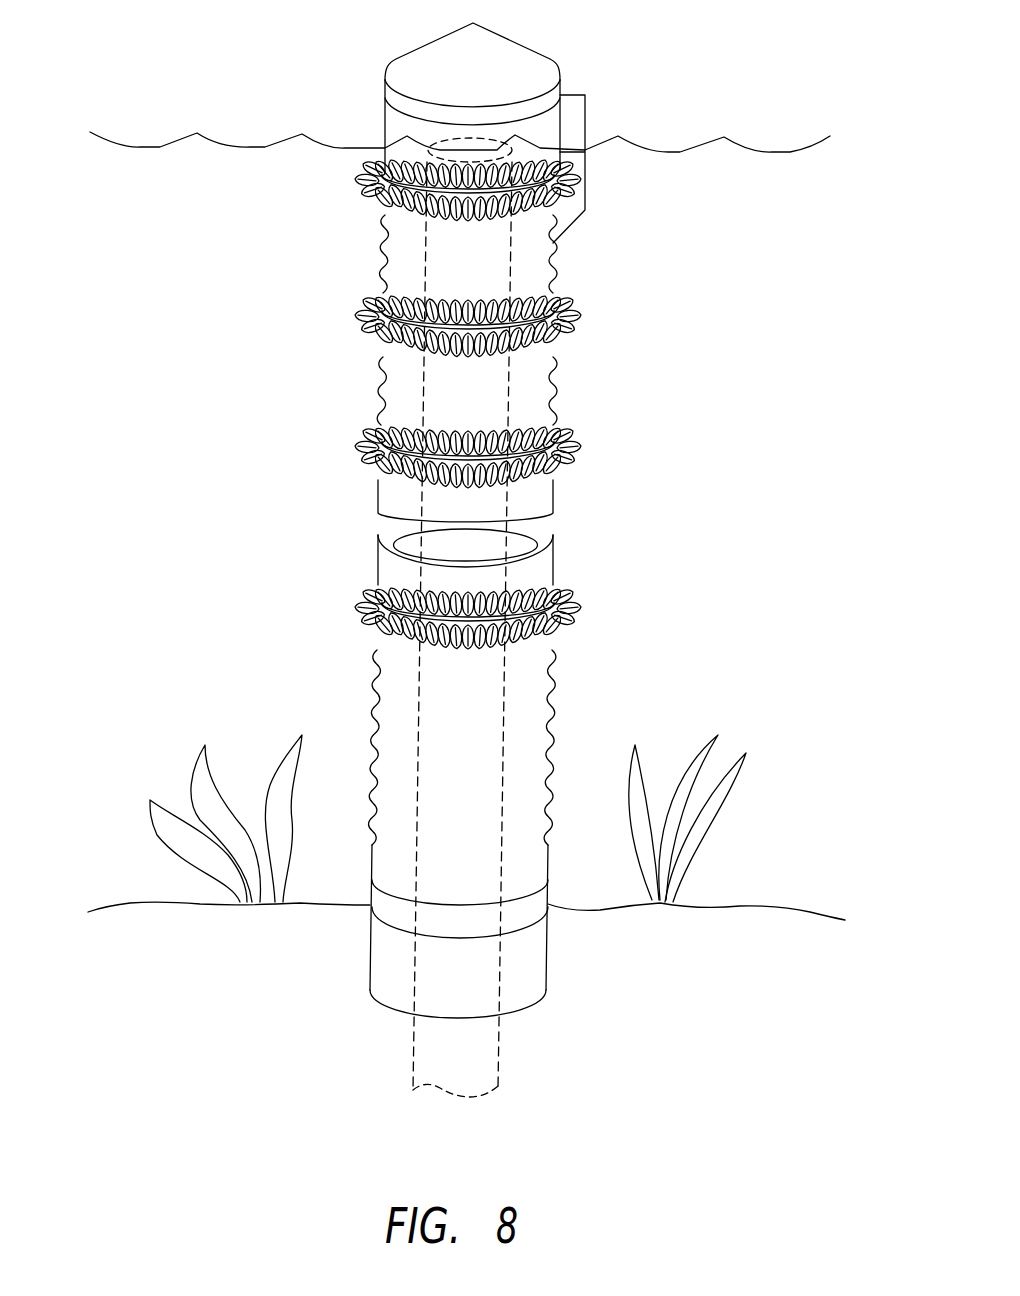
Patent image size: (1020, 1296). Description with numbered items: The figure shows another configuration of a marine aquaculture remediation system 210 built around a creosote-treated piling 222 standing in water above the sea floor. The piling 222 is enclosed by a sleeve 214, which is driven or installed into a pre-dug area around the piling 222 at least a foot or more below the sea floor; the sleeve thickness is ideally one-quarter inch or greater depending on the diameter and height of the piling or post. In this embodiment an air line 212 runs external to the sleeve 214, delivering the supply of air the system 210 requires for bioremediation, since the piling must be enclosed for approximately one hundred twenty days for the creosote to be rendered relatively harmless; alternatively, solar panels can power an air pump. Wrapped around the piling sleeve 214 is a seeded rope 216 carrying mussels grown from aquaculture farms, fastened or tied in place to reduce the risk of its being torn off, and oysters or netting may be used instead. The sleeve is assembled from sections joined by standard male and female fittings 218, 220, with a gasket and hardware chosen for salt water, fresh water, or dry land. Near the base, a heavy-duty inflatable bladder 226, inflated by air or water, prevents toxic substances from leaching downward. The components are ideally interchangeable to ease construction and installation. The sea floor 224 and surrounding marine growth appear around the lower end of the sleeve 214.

The marine aquaculture remediation system 210 is at (570, 252).
The air line 212 is at (590, 138).
The sleeve 214 is at (557, 386).
The seeded rope 216 is at (556, 429).
The male fitting 218 is at (567, 566).
The female fitting 220 is at (570, 493).
The piling 222 is at (487, 1065).
The sea bed 224 is at (124, 903).
The inflatable bladder 226 is at (548, 895).